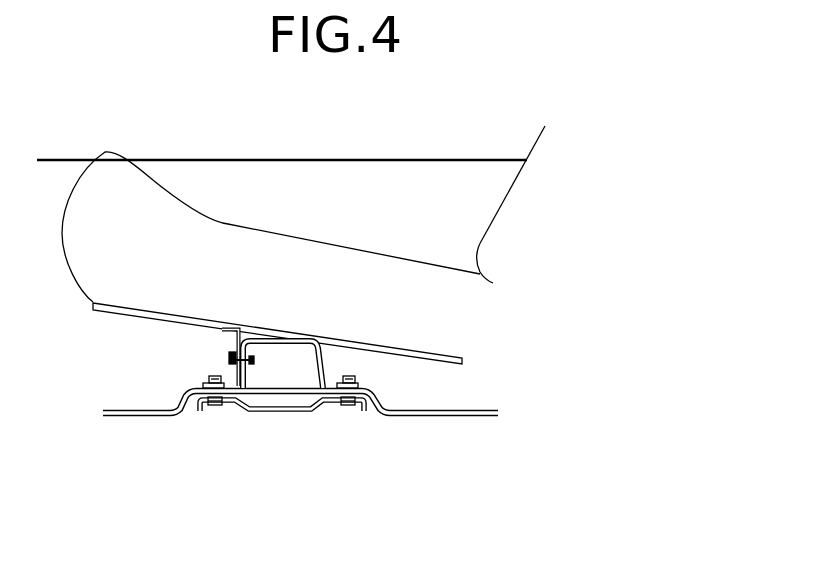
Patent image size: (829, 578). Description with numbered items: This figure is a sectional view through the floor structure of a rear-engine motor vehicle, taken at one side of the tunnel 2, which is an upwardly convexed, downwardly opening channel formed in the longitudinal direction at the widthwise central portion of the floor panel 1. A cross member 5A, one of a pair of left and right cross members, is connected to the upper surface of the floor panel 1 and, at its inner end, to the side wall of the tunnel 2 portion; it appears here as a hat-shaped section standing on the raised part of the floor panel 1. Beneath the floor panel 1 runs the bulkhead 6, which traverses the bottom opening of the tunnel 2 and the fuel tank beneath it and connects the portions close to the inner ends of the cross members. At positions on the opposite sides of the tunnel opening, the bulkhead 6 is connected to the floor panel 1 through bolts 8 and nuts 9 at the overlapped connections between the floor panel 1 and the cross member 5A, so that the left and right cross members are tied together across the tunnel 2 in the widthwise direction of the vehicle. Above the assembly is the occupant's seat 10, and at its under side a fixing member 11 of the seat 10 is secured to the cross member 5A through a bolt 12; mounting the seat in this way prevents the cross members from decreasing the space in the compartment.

The floor panel 1 is at (434, 416).
The tunnel 2 is at (357, 160).
The occupant's seat 10 is at (363, 250).
The fixing member 11 is at (230, 329).
The bolt 12 is at (230, 358).
The cross member 5A is at (321, 356).
The bulkhead 6 is at (272, 412).
The bolt 8 is at (218, 406).
The nut 9 is at (207, 384).